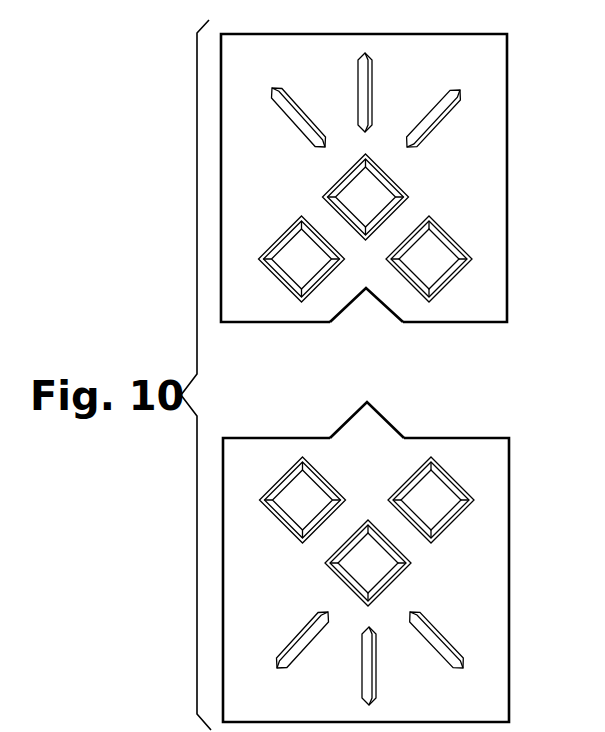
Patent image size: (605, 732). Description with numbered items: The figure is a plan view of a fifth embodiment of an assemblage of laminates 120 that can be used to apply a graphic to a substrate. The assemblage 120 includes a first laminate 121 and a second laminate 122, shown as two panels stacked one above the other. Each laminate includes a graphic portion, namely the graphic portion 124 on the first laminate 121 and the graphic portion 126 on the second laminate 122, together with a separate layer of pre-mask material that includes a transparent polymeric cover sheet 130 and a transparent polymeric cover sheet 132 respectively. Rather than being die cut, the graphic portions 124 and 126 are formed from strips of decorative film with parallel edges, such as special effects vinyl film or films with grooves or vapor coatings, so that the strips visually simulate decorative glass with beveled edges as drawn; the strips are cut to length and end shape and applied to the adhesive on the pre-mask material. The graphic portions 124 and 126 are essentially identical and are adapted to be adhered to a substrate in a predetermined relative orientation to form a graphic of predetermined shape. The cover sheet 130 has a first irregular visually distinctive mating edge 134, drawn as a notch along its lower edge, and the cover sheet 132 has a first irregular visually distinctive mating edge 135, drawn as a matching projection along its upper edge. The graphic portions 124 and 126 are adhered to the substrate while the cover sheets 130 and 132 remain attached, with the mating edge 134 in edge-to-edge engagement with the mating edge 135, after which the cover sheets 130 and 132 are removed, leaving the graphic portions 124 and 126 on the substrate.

The assemblage of laminates 120 is at (531, 72).
The first laminate 121 is at (509, 230).
The second laminate 122 is at (513, 509).
The graphic portion 124 is at (398, 184).
The graphic portion 126 is at (402, 575).
The transparent polymeric cover sheet 130 is at (495, 270).
The transparent polymeric cover sheet 132 is at (497, 620).
The first irregular visually distinctive mating edge 134 is at (347, 308).
The first irregular visually distinctive mating edge 135 is at (387, 418).